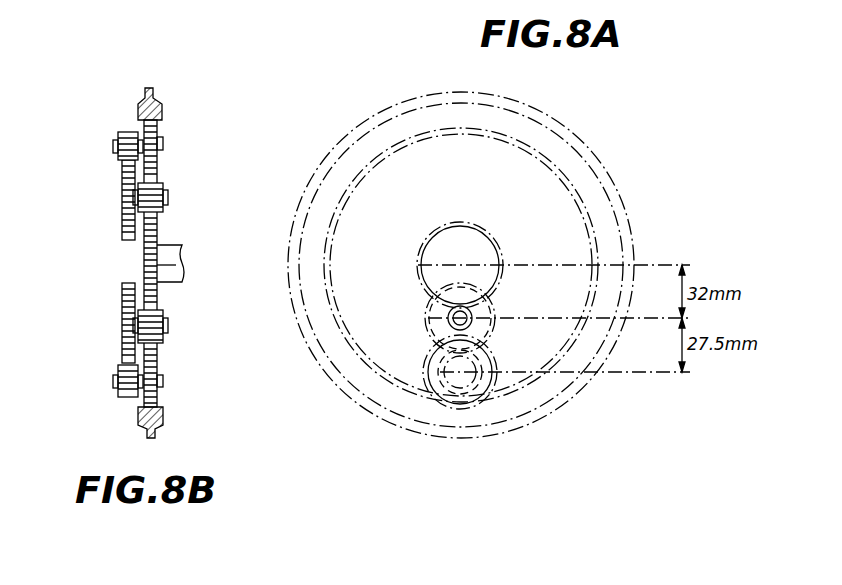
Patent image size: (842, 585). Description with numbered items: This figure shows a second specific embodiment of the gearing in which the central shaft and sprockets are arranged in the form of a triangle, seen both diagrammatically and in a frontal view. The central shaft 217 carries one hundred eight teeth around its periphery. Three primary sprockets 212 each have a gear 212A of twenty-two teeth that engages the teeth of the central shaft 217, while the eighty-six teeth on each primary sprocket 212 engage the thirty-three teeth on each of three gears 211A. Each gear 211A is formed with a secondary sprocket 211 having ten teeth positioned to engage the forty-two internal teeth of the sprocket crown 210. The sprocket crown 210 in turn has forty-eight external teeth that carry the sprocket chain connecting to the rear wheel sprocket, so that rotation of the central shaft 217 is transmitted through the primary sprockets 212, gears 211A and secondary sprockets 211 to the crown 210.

In FIG. 8A, the sprocket crown 210 is at (596, 163).
In FIG. 8B, the sprocket crown 210 is at (162, 100).
In FIG. 8A, the secondary sprocket 211 is at (470, 392).
In FIG. 8B, the secondary sprocket 211 is at (162, 128).
In FIG. 8B, the gear 211A is at (118, 135).
In FIG. 8A, the primary sprocket 212 is at (428, 318).
In FIG. 8B, the primary sprocket 212 is at (122, 172).
In FIG. 8B, the gear 212A is at (163, 192).
In FIG. 8A, the central shaft 217 is at (470, 232).
In FIG. 8B, the central shaft 217 is at (143, 262).